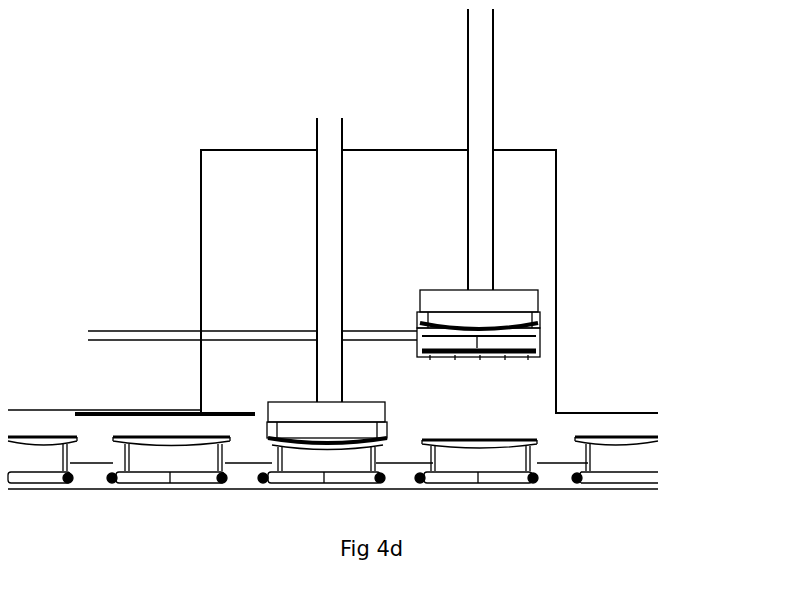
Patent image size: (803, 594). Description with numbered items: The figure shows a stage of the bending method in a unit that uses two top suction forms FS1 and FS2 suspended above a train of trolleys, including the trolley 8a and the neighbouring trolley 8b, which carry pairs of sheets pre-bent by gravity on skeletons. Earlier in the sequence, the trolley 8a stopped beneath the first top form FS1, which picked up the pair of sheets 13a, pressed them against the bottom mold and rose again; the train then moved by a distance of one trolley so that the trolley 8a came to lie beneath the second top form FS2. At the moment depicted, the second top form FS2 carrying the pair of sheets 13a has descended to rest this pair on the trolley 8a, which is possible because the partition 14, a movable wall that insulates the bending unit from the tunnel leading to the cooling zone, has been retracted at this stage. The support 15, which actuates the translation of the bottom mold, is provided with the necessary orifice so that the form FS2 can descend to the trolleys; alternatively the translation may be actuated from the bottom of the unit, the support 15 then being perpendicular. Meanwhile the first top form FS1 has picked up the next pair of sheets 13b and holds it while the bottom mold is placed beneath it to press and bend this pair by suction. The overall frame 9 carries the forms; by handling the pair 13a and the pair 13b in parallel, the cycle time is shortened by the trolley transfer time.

The gantry frame 9 is at (558, 188).
The support 15 is at (141, 331).
The partition 14 is at (231, 410).
The first top suction form FS1 is at (543, 311).
The pair of sheets 13b is at (541, 325).
The second top suction form FS2 is at (389, 421).
The pair of sheets 13a is at (390, 440).
The trolley 8a is at (366, 451).
The second pallet 8b is at (522, 451).